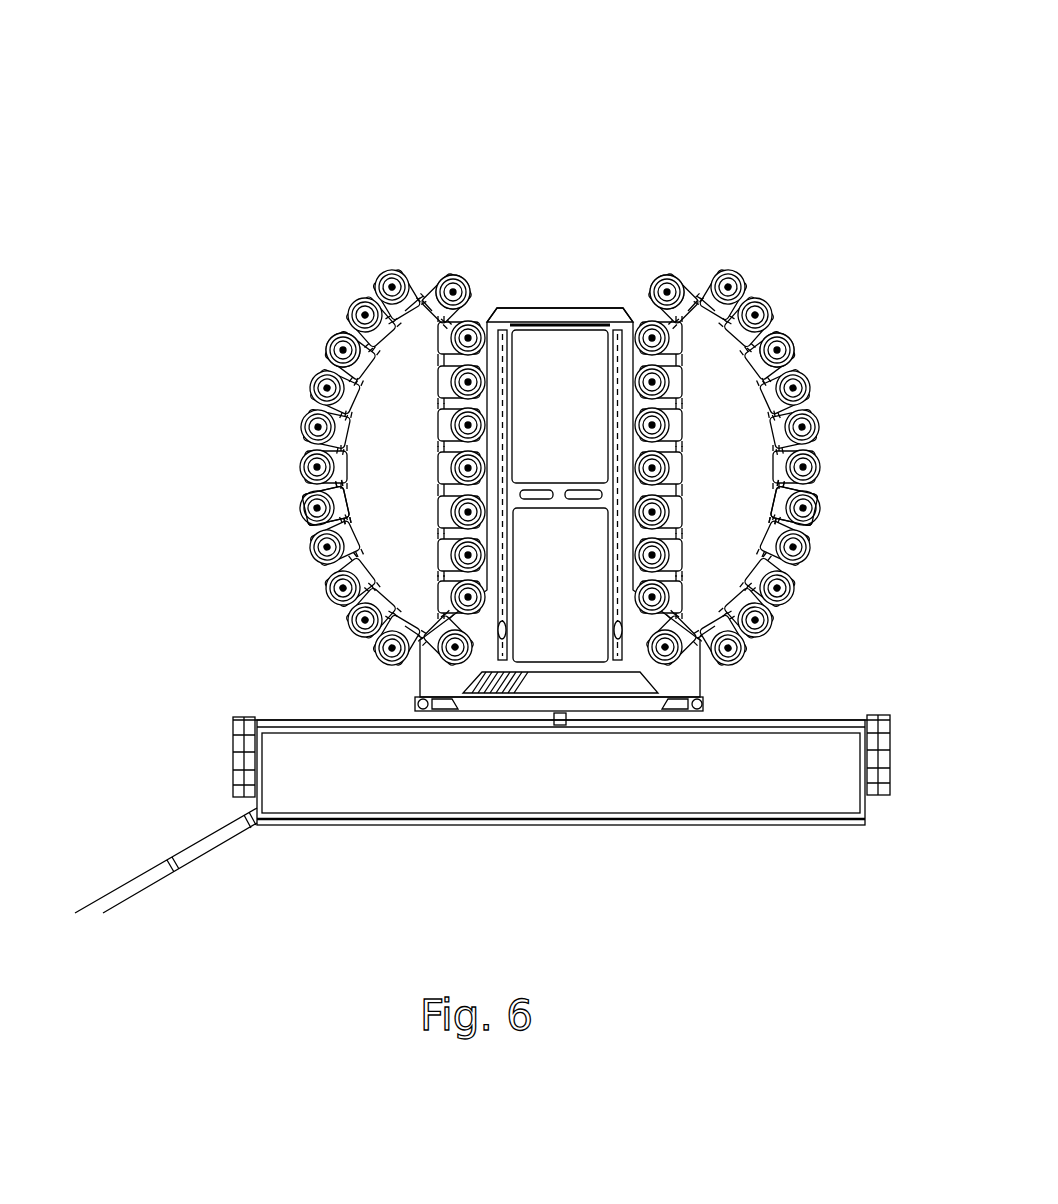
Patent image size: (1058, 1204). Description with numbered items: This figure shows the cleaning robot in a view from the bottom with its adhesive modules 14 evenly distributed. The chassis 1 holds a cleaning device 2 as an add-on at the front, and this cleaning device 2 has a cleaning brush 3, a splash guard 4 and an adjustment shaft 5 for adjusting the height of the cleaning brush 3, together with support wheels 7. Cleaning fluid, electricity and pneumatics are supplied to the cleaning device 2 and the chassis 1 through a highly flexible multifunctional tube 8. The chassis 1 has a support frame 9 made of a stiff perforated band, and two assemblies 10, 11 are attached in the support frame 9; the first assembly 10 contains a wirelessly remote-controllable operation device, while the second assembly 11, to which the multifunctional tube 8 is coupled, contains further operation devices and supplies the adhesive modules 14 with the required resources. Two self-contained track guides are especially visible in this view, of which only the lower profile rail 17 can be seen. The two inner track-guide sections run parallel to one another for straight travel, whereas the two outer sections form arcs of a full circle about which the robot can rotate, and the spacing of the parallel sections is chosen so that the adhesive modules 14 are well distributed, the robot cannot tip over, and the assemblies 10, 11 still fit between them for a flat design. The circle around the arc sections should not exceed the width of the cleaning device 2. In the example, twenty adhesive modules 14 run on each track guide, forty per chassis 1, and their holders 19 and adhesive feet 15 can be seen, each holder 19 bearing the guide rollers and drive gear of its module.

The chassis 1 is at (558, 145).
The cleaning device 2 is at (615, 850).
The cleaning brush 3 is at (752, 785).
The splash guard 4 is at (418, 818).
The adjustment shaft 5 is at (795, 722).
The support wheels 7 is at (233, 723).
The multifunctional tube 8 is at (193, 847).
The support frame 9 is at (570, 313).
The first assembly 10 is at (560, 406).
The second assembly 11 is at (560, 585).
The adhesive modules 14 is at (437, 297).
The adhesive feet 15 is at (330, 345).
The lower profile rail 17 is at (343, 407).
The holder 19 is at (342, 500).